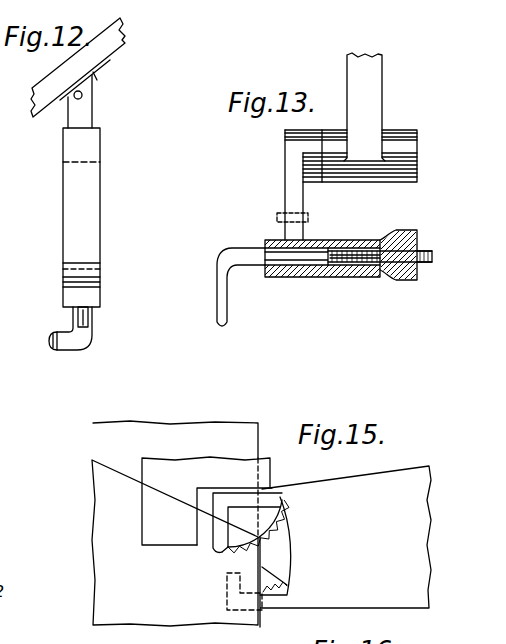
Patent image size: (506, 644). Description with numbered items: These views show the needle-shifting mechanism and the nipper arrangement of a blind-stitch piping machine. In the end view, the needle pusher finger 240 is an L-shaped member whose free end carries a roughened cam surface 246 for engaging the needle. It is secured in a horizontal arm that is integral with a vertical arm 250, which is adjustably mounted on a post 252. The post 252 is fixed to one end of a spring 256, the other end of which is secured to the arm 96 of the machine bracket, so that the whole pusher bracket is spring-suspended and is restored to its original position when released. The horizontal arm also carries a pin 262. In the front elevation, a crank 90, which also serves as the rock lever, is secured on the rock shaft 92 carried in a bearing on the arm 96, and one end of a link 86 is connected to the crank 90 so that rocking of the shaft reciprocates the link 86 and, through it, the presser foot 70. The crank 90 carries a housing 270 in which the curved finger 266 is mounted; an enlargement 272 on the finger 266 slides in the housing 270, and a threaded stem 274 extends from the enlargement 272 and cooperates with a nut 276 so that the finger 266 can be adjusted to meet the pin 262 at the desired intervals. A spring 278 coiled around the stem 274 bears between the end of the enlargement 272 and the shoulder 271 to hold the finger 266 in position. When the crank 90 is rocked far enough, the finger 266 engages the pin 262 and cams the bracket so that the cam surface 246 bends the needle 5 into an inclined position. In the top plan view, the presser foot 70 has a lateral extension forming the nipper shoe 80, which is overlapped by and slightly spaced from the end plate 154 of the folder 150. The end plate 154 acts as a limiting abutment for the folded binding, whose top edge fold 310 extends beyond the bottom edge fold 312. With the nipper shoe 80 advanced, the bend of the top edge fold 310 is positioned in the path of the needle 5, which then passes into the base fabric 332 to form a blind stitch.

In FIG. 12, the arm 96 is at (110, 50).
In FIG. 13, the arm 96 is at (382, 78).
In FIG. 12, the spring 256 is at (82, 93).
In FIG. 12, the post 252 is at (92, 117).
In FIG. 12, the vertical arm 250 is at (93, 222).
In FIG. 12, the pin 262 is at (88, 313).
In FIG. 12, the needle pusher finger 240 is at (92, 338).
In FIG. 12, the cam surface 246 is at (53, 349).
In FIG. 13, the rock shaft 92 is at (405, 130).
In FIG. 13, the crank 90 is at (285, 190).
In FIG. 13, the link 86 is at (283, 217).
In FIG. 13, the housing 270 is at (350, 240).
In FIG. 13, the shoulder 271 is at (379, 243).
In FIG. 13, the enlargement 272 is at (290, 262).
In FIG. 13, the spring 278 is at (360, 276).
In FIG. 13, the nut 276 is at (406, 238).
In FIG. 13, the threaded stem 274 is at (428, 263).
In FIG. 13, the finger 266 is at (222, 303).
In FIG. 15, the presser foot 70 is at (156, 494).
In FIG. 15, the end plate 154 is at (223, 514).
In FIG. 15, the nipper shoe 80 is at (204, 537).
In FIG. 15, the top edge fold 310 is at (270, 512).
In FIG. 15, the needle 5 is at (240, 556).
In FIG. 15, the bottom edge fold 312 is at (288, 587).
In FIG. 15, the folder 150 is at (226, 598).
In FIG. 15, the base fabric 332 is at (184, 616).